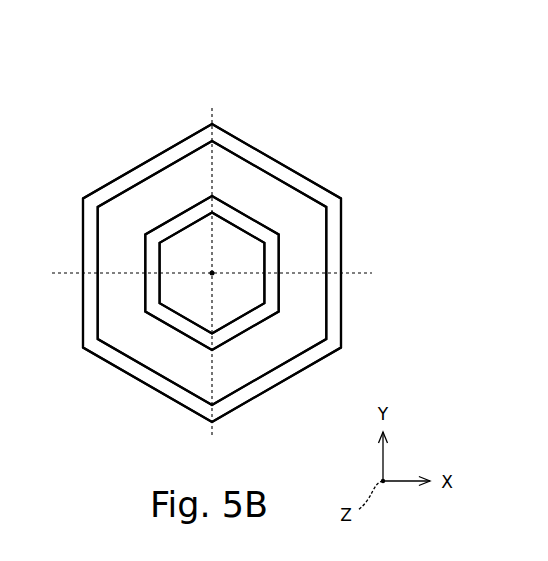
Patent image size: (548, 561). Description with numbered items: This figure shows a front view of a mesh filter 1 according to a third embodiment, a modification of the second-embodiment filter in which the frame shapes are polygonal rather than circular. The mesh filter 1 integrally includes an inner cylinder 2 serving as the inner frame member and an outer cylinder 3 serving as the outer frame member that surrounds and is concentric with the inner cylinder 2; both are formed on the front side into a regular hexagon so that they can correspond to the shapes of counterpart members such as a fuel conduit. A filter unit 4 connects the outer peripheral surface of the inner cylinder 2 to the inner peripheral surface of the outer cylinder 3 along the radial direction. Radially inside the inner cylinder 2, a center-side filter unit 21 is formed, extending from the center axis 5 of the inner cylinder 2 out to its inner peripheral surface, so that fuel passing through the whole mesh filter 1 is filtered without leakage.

The mesh filter 1 is at (315, 147).
The inner cylinder 2 is at (282, 263).
The center-side filter unit 21 is at (237, 291).
The outer cylinder 3 is at (342, 218).
The filter unit 4 is at (290, 208).
The center axis 5 is at (212, 273).